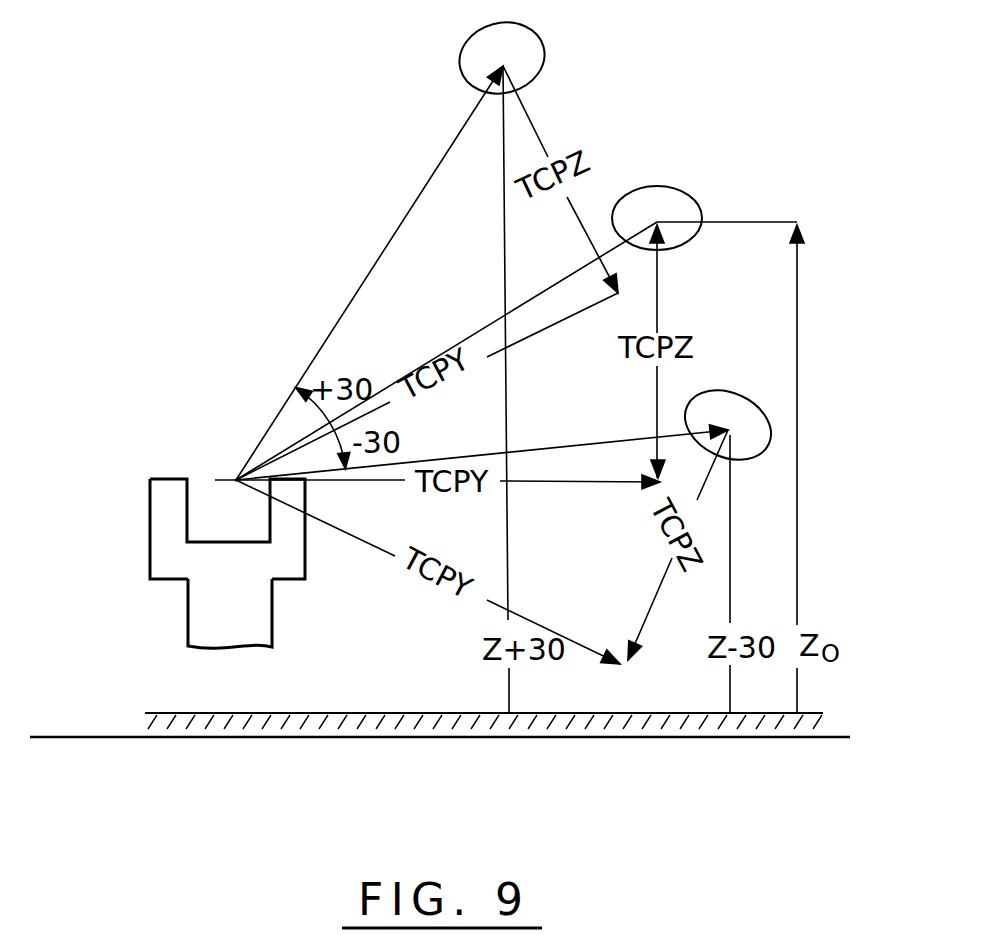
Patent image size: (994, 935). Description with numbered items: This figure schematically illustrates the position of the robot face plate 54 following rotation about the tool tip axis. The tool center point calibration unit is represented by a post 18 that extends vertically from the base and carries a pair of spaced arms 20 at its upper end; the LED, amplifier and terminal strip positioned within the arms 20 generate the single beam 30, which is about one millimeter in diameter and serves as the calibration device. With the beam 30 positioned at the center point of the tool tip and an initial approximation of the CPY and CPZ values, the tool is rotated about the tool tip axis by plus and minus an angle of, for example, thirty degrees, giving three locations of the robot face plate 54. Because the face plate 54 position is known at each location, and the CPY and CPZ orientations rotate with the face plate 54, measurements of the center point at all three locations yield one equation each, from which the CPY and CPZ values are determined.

The post 18 is at (207, 617).
The arms 20 is at (160, 533).
The beam 30 is at (215, 480).
The robot face plate 54 is at (540, 32).